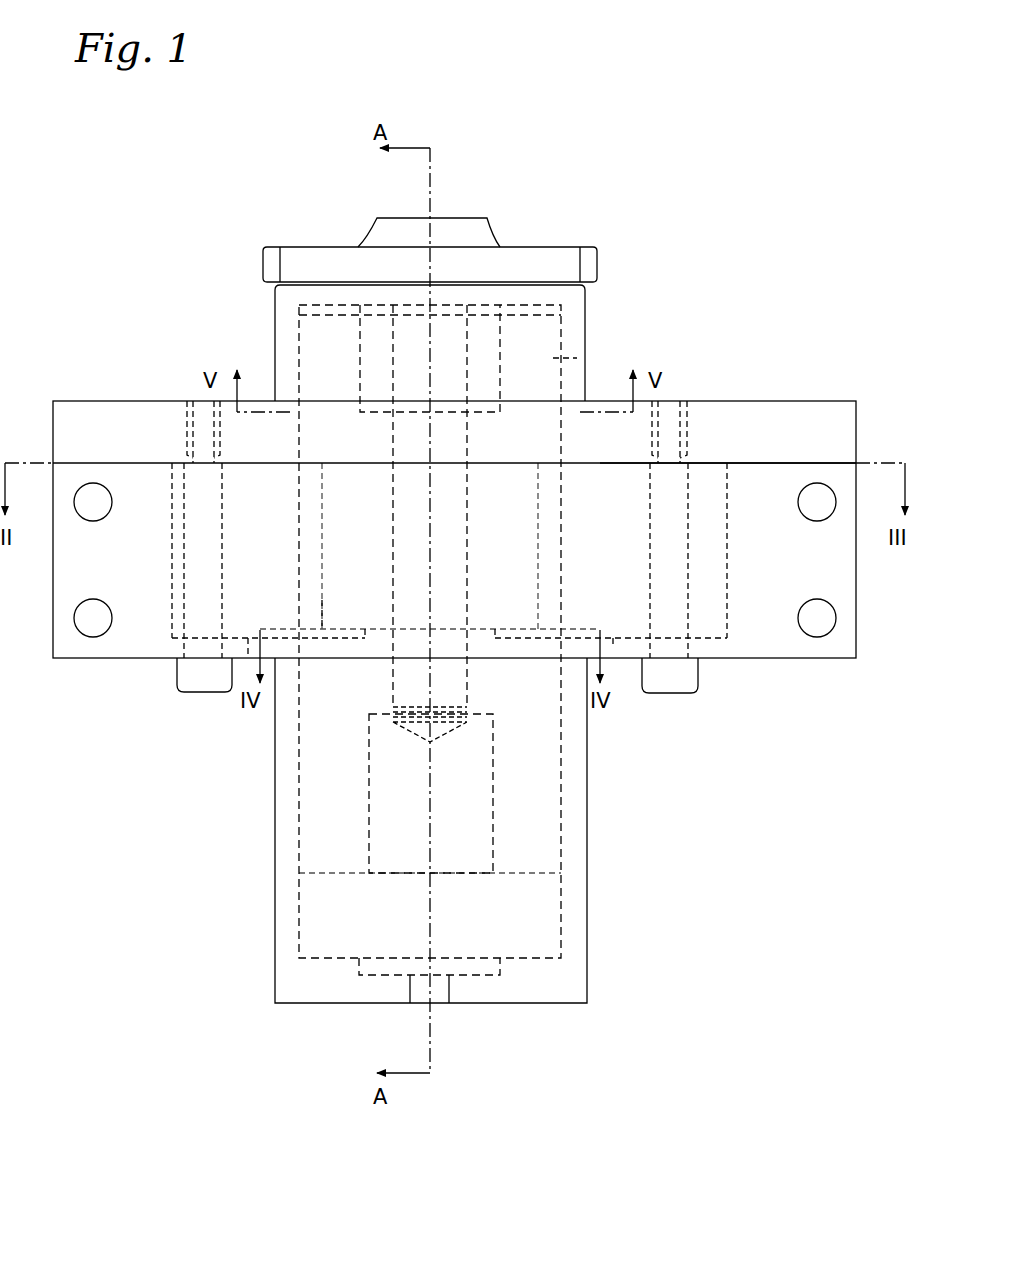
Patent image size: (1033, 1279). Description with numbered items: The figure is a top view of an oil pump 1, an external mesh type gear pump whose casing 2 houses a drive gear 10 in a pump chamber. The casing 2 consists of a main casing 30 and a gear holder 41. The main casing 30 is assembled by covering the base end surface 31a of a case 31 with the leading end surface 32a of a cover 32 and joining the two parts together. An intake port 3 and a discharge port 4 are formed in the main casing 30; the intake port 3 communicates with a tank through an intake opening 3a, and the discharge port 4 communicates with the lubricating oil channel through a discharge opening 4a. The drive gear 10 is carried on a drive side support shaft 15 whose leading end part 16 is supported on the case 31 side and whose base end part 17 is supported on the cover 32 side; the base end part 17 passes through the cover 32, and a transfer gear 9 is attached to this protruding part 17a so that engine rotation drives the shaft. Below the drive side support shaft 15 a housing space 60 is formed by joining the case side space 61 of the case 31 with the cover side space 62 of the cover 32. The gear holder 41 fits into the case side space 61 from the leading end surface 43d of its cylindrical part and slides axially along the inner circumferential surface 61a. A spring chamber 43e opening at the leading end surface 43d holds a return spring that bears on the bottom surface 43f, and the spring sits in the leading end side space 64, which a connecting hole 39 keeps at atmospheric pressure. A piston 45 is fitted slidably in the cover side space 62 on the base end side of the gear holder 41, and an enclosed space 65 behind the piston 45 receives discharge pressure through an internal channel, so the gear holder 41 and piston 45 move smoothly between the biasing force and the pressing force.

The oil pump 1 is at (812, 222).
The casing 2 is at (98, 395).
The transfer gear 9 is at (522, 245).
The protruding part 17a is at (413, 277).
The base end part 17 is at (420, 358).
The cover side space 62 is at (562, 302).
The enclosed space 65 is at (529, 337).
The piston 45 is at (570, 358).
The cover 32 is at (577, 383).
The base end surface 31a is at (760, 463).
The leading end surface 32a is at (602, 464).
The discharge port 4 is at (269, 523).
The intake port 3 is at (611, 583).
The drive side support shaft 15 is at (410, 558).
The drive gear 10 is at (340, 600).
The leading end part 16 is at (458, 683).
The case 31 is at (793, 658).
The intake opening 3a is at (710, 660).
The discharge opening 4a is at (242, 690).
The bottom surface 43f is at (478, 718).
The main casing 30 is at (590, 787).
The gear holder 41 is at (562, 850).
The inner circumferential surface 61a is at (308, 900).
The case side space 61 is at (553, 927).
The leading end side space 64 is at (530, 946).
The spring chamber 43e is at (393, 860).
The leading end surface 43d is at (513, 873).
The housing space 60 is at (317, 940).
The connecting hole 39 is at (449, 988).